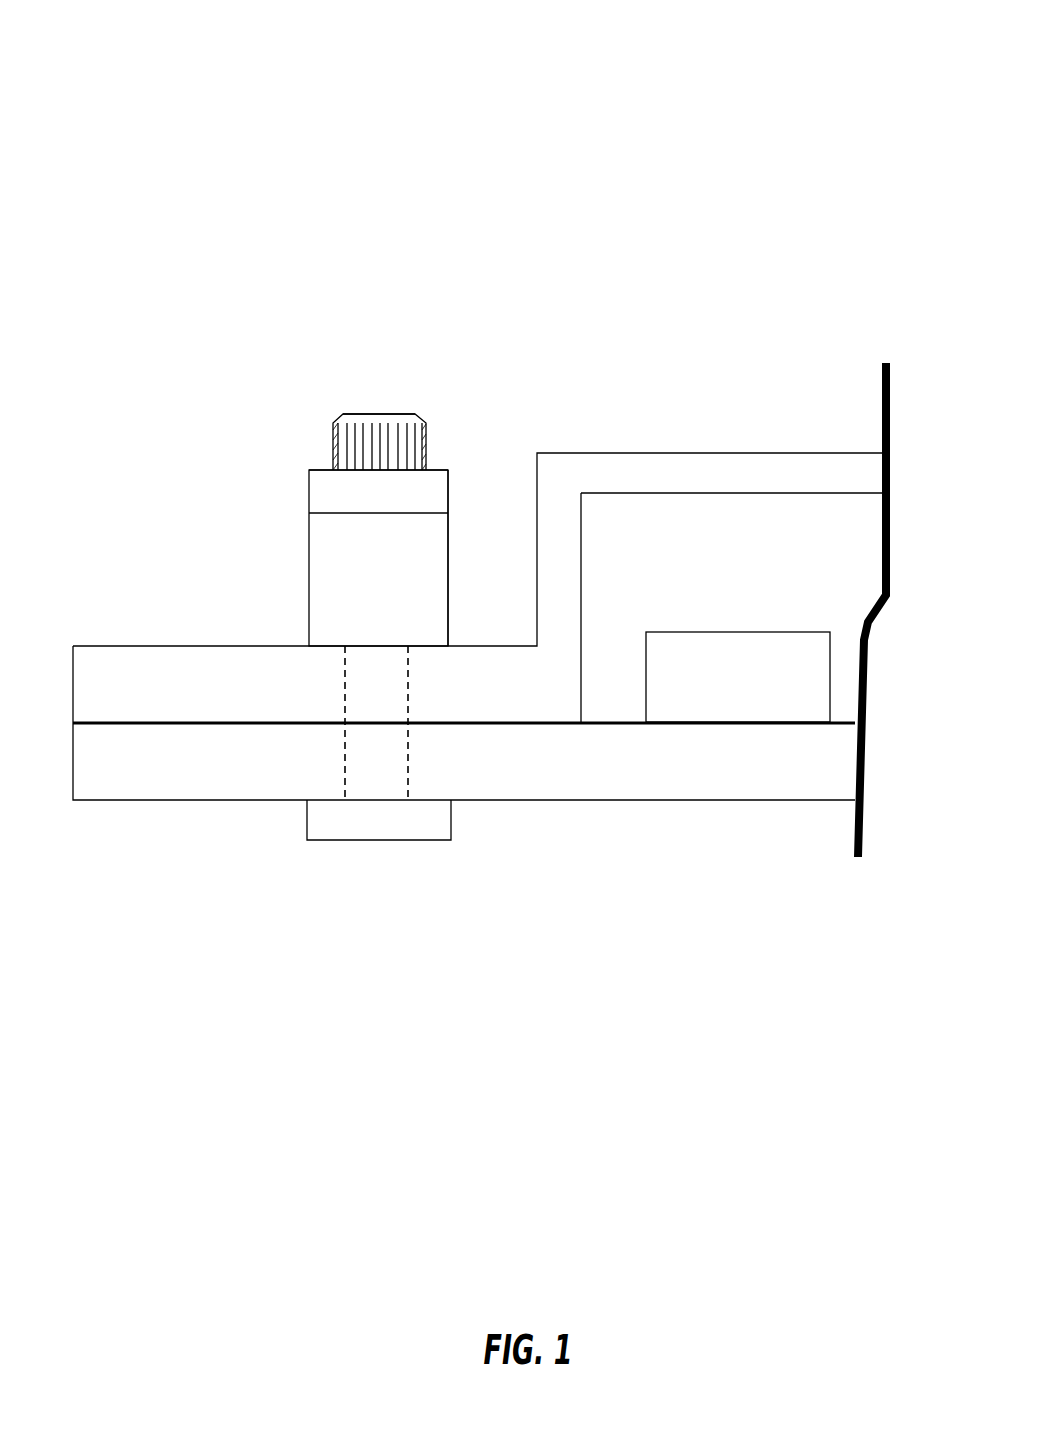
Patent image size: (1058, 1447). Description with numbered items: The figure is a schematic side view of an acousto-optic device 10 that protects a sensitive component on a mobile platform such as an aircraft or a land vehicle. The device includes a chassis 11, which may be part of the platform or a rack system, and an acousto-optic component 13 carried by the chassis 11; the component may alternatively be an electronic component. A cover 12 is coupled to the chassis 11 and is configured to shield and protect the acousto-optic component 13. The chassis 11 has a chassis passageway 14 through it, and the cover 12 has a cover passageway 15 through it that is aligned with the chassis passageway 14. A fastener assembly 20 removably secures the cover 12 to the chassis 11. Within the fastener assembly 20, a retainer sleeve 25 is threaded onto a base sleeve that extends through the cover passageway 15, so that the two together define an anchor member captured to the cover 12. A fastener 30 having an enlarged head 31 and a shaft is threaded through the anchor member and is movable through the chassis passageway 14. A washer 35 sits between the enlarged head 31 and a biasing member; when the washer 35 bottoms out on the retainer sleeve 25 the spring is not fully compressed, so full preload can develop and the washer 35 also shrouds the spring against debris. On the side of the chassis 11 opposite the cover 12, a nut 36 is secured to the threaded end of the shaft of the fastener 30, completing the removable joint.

The acousto-optic device 10 is at (864, 138).
The chassis 11 is at (138, 785).
The cover 12 is at (132, 670).
The acousto-optic component 13 is at (707, 690).
The chassis passageway 14 is at (345, 762).
The cover passageway 15 is at (405, 660).
The fastener assembly 20 is at (452, 456).
The retainer sleeve 25 is at (325, 550).
The fastener 30 is at (366, 392).
The enlarged head 31 is at (427, 417).
The washer 35 is at (340, 487).
The nut 36 is at (400, 827).